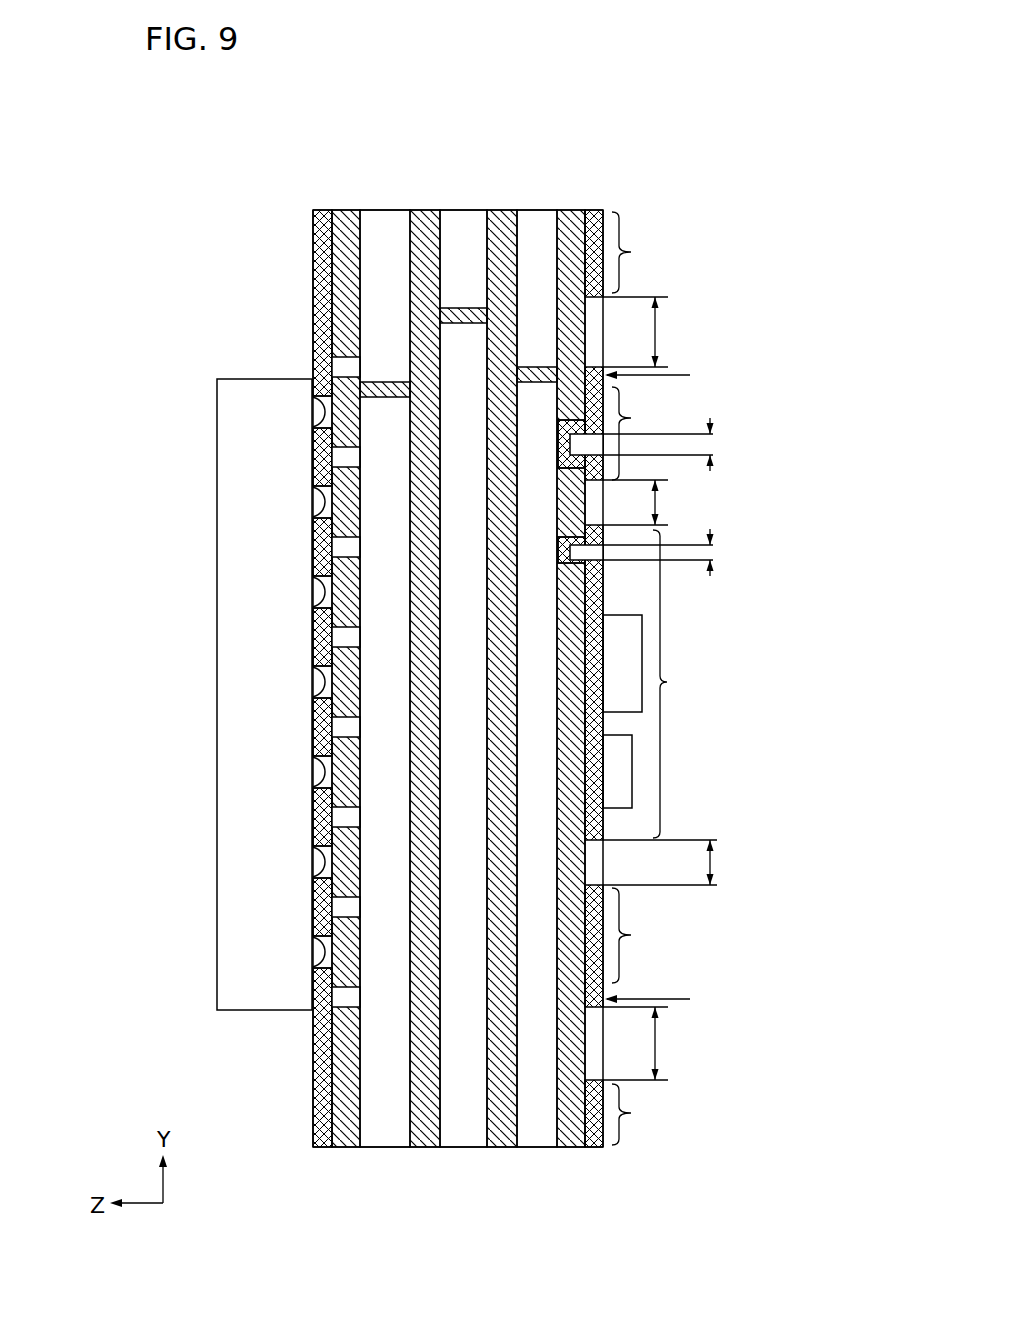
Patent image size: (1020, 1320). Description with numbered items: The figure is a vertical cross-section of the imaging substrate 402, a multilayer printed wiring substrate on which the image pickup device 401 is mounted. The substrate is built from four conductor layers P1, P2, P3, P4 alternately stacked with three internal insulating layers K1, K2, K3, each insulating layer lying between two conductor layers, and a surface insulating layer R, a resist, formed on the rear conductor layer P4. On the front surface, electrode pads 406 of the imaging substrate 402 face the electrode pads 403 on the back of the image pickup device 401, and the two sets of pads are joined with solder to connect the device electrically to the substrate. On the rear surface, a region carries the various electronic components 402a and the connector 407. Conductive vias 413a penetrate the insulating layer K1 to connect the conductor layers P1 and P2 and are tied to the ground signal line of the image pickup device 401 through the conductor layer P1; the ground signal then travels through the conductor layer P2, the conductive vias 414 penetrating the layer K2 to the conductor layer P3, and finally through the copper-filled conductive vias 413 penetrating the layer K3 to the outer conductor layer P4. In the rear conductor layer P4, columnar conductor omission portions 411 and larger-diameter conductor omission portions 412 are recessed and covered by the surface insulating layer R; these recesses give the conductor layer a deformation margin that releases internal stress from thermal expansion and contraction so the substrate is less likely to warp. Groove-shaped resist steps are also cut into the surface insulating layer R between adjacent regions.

The image pickup device 401 is at (238, 411).
The imaging substrate 402 is at (323, 210).
The electronic components 402a is at (632, 770).
The electrode pads 403 is at (313, 413).
The electrode pads 406 is at (313, 532).
The connector 407 is at (642, 640).
The conductor omission portions 411 is at (587, 553).
The conductor omission portions 412 is at (587, 445).
The conductive vias 413 is at (540, 373).
The conductive vias 413a is at (390, 382).
The conductive vias 414 is at (463, 308).
The conductor layer P1 is at (348, 210).
The conductor layer P2 is at (423, 210).
The conductor layer P3 is at (498, 210).
The conductor layer P4 is at (570, 210).
The internal insulating layer K1 is at (377, 210).
The internal insulating layer K2 is at (455, 210).
The internal insulating layer K3 is at (530, 210).
The surface insulating layer R is at (593, 210).